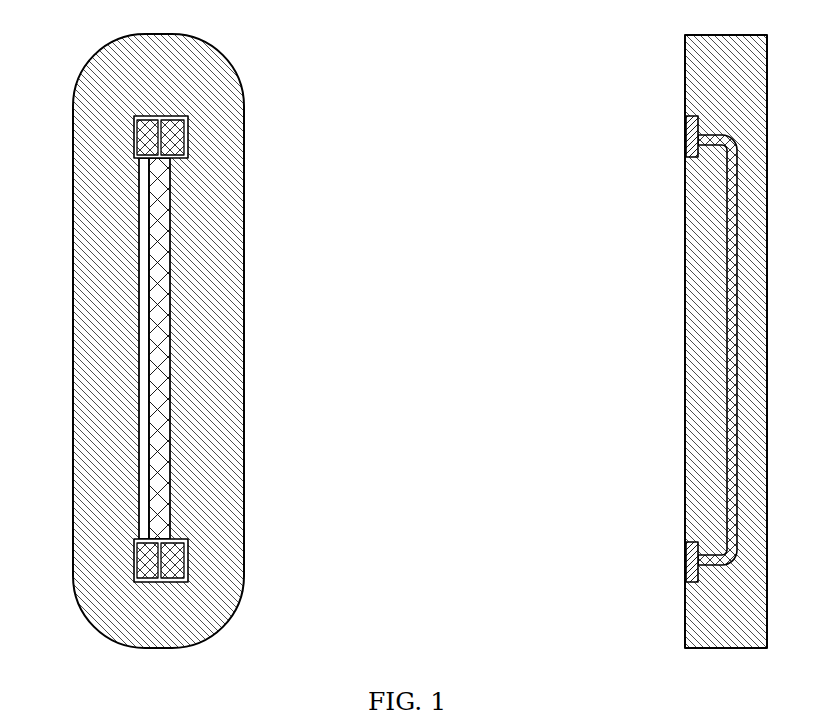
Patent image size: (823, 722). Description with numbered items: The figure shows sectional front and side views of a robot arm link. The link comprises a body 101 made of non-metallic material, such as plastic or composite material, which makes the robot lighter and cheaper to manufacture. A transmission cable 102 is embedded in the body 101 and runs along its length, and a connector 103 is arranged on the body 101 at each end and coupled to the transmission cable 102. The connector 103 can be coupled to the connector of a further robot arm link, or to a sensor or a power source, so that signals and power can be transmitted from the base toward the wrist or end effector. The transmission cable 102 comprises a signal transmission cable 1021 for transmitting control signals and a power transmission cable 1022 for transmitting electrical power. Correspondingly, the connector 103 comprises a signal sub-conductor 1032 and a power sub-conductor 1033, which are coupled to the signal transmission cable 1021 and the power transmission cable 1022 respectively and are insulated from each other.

The body 101 is at (220, 88).
The transmission cable 102 is at (176, 232).
The signal transmission cable 1021 is at (141, 179).
The power transmission cable 1022 is at (171, 183).
The connector 103 is at (198, 126).
The signal sub-conductor 1032 is at (140, 127).
The power sub-conductor 1033 is at (180, 143).